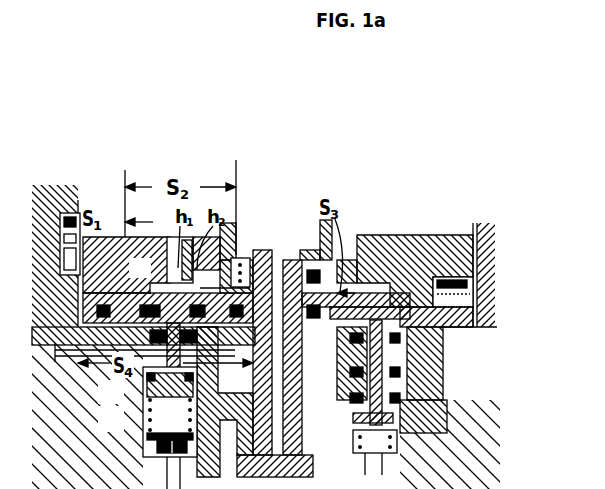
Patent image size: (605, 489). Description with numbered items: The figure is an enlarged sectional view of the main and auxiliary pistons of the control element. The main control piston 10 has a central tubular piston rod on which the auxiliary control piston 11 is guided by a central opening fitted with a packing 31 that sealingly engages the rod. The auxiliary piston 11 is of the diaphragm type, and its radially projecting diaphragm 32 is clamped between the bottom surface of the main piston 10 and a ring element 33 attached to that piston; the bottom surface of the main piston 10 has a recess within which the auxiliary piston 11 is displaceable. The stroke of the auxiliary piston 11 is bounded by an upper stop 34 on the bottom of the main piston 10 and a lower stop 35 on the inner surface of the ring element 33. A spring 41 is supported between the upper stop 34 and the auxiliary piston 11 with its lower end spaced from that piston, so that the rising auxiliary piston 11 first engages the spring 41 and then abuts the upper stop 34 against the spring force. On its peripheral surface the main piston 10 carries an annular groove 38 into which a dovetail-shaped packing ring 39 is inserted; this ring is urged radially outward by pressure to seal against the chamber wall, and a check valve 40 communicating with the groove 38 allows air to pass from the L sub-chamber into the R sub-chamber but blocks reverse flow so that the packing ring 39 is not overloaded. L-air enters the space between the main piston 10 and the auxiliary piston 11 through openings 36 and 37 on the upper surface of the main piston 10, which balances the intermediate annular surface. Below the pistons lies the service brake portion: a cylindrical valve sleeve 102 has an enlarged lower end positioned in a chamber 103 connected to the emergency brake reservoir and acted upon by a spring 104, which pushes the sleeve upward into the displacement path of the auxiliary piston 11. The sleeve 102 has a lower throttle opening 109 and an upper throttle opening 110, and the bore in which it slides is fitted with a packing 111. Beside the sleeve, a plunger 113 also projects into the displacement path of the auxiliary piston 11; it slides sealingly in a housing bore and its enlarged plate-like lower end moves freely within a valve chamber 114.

The main control piston 10 is at (393, 260).
The auxiliary control piston 11 is at (375, 296).
The packing 31 is at (314, 318).
The diaphragm 32 is at (395, 292).
The ring element 33 is at (78, 309).
The upper stop 34 is at (385, 280).
The lower stop 35 is at (390, 372).
The opening 36 is at (165, 268).
The opening 37 is at (358, 235).
The annular groove 38 is at (112, 237).
The packing ring 39 is at (60, 252).
The check valve 40 is at (477, 285).
The spring 41 is at (297, 258).
The cylindrical valve sleeve 102 is at (446, 416).
The R1 chamber 103 is at (397, 440).
The spring 104 is at (400, 447).
The lower throttle opening 109 is at (360, 445).
The upper throttle opening 110 is at (360, 385).
The packing 111 is at (497, 400).
The plunger 113 is at (147, 377).
The valve chamber 114 is at (160, 409).